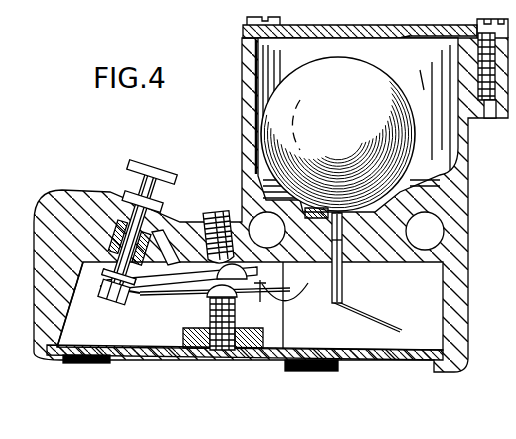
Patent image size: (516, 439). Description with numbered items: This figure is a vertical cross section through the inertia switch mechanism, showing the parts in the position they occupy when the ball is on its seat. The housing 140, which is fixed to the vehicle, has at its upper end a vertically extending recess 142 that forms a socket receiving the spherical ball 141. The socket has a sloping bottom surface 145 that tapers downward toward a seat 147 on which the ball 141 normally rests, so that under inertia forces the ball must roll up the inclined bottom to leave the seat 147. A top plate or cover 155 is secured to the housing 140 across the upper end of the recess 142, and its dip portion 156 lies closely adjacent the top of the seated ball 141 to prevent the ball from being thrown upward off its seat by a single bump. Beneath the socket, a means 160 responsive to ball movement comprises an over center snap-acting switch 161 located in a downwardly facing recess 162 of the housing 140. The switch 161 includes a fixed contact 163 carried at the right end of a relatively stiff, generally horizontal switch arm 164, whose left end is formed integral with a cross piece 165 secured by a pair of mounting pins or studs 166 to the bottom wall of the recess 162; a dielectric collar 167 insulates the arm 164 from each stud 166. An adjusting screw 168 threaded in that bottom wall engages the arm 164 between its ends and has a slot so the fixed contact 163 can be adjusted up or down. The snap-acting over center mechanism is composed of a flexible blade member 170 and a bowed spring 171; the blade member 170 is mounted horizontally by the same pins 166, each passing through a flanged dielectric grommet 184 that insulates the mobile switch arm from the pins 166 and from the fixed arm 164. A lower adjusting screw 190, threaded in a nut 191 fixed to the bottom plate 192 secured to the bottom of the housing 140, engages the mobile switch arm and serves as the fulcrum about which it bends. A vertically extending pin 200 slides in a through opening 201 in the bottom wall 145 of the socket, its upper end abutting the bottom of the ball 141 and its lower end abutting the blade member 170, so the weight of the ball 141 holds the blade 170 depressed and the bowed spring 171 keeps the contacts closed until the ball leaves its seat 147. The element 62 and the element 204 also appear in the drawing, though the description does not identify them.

The chamber 62 is at (407, 307).
The housing 140 is at (62, 190).
The spherical ball 141 is at (372, 72).
The recess 142 is at (440, 126).
The sloping bottom surface 145 is at (468, 190).
The seat 147 is at (383, 224).
The top plate or cover 155 is at (446, 28).
The dip portion 156 is at (338, 45).
The means responsive to movement of the ball 160 is at (118, 323).
The over center snap-acting switch 161 is at (185, 262).
The downwardly facing recess 162 is at (182, 228).
The fixed contact 163 is at (262, 273).
The switch arm 164 is at (256, 280).
The cross piece 165 is at (108, 258).
The mounting pins or studs 166 is at (162, 170).
The collar 167 is at (118, 238).
The adjusting screw 168 is at (233, 213).
The flexible blade member 170 is at (312, 304).
The bowed spring 171 is at (288, 323).
The flanged grommet 184 is at (104, 291).
The adjusting screw 190 is at (213, 320).
The nut 191 is at (265, 329).
The bottom plate 192 is at (180, 346).
The pin 200 is at (343, 277).
The through opening 201 is at (329, 240).
The lever end 204 is at (137, 292).